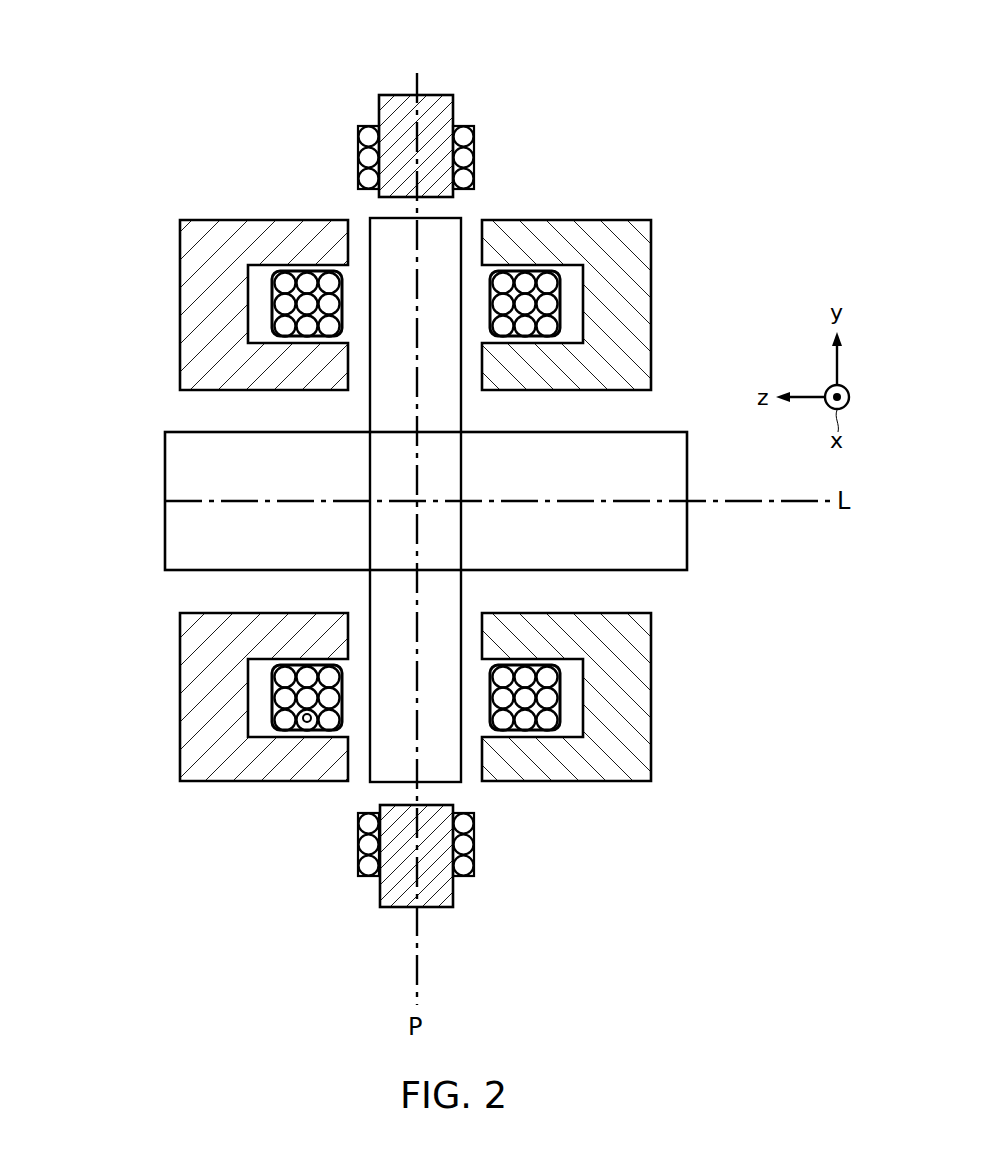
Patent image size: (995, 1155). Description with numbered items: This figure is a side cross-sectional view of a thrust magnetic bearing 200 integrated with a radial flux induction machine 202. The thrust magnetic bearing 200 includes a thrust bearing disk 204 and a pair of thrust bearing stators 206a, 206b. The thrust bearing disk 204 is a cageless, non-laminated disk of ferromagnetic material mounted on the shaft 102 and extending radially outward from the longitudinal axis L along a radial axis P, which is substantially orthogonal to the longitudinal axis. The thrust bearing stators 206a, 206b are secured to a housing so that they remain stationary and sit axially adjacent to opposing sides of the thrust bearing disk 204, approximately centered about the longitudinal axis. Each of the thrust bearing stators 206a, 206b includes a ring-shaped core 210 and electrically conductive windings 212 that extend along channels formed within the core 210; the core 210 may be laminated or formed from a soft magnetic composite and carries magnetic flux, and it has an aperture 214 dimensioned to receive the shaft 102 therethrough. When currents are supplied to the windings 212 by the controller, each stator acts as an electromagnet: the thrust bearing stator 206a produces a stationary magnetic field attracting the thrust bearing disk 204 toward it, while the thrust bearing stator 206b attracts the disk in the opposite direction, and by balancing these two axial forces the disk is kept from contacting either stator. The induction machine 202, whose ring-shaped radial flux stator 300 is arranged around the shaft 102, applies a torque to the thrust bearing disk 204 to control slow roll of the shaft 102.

The shaft 102 is at (637, 552).
The thrust magnetic bearing 200 is at (708, 291).
The radial flux induction machine 202 is at (184, 100).
The thrust bearing disk 204 is at (388, 465).
The thrust bearing stator 206a is at (183, 693).
The thrust bearing stator 206b is at (652, 697).
The core 210 is at (208, 297).
The electrically conductive windings 212 is at (303, 285).
The aperture 214 is at (172, 411).
The radial flux stator 300 is at (390, 112).